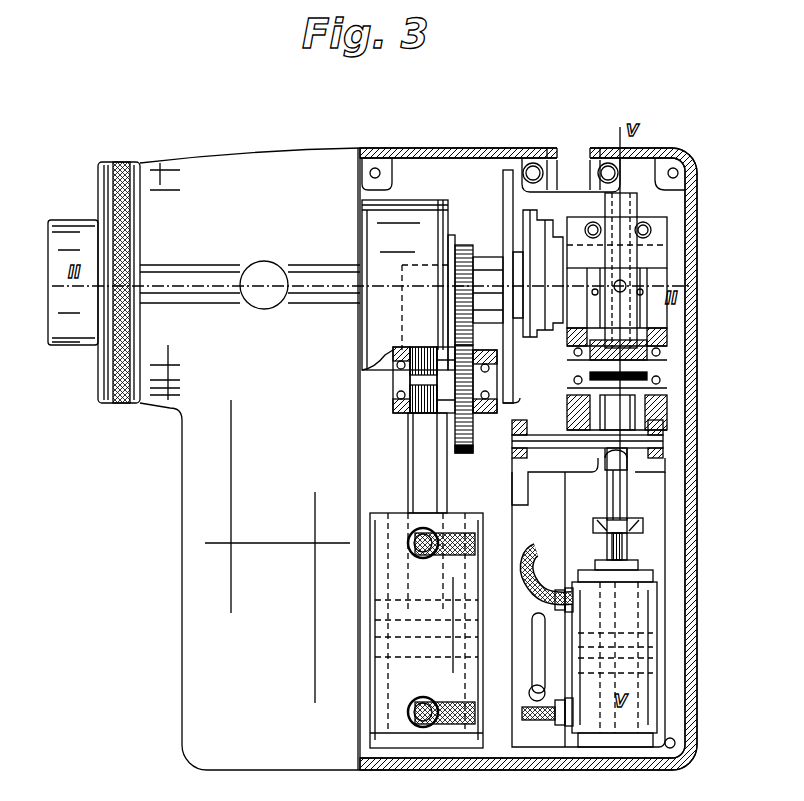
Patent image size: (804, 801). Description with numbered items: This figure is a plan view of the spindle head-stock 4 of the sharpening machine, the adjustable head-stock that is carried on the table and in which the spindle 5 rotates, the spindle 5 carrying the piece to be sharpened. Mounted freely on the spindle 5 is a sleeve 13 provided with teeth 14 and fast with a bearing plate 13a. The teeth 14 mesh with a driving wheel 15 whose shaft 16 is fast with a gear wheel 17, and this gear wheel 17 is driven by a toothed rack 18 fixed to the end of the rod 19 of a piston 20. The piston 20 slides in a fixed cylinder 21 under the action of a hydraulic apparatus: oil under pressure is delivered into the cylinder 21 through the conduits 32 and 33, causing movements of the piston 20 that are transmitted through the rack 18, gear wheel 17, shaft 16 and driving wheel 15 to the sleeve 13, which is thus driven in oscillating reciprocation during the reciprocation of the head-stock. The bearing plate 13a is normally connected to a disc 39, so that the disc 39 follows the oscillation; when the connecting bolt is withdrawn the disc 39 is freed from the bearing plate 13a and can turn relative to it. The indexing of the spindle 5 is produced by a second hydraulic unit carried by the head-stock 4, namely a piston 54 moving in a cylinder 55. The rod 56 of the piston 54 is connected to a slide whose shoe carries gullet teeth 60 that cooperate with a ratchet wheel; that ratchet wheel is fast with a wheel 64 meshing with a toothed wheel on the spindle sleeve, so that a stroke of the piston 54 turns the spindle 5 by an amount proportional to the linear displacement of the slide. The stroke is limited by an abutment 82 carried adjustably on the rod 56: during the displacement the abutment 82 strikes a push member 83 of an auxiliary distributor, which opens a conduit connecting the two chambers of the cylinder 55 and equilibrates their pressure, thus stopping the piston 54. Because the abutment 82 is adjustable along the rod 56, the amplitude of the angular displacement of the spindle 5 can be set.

The spindle head-stock 4 is at (190, 636).
The spindle 5 is at (72, 220).
The sleeve 13 is at (481, 256).
The bearing plate 13a is at (510, 402).
The teeth 14 is at (460, 248).
The driving wheel 15 is at (473, 447).
The shaft 16 is at (437, 417).
The gear wheel 17 is at (410, 415).
The toothed rack 18 is at (428, 350).
The rod 19 is at (415, 490).
The piston 20 is at (395, 628).
The fixed cylinder 21 is at (397, 657).
The conduit 32 is at (455, 535).
The conduit 33 is at (458, 725).
The disc 39 is at (542, 218).
The piston 54 is at (600, 640).
The cylinder 55 is at (645, 725).
The rod 56 is at (625, 500).
The gullet teeth 60 is at (652, 268).
The wheel 64 is at (568, 398).
The abutment 82 is at (640, 525).
The push member 83 is at (628, 548).